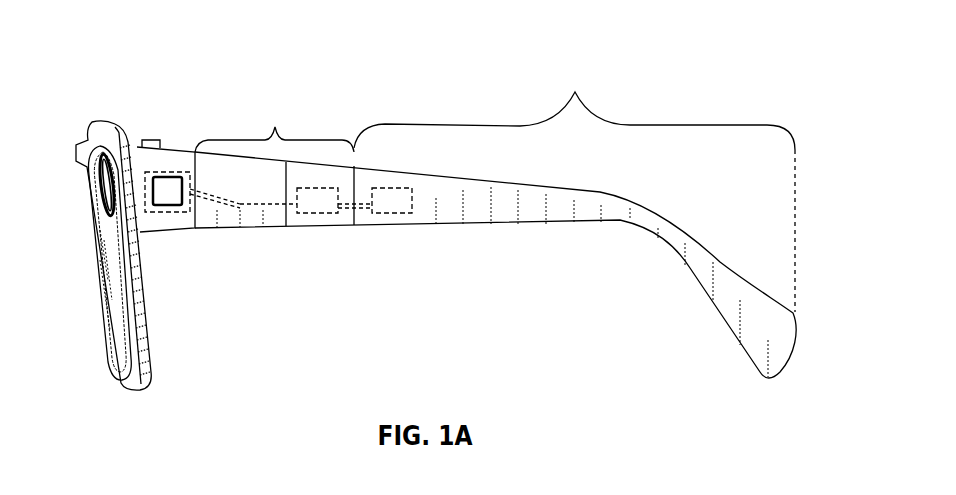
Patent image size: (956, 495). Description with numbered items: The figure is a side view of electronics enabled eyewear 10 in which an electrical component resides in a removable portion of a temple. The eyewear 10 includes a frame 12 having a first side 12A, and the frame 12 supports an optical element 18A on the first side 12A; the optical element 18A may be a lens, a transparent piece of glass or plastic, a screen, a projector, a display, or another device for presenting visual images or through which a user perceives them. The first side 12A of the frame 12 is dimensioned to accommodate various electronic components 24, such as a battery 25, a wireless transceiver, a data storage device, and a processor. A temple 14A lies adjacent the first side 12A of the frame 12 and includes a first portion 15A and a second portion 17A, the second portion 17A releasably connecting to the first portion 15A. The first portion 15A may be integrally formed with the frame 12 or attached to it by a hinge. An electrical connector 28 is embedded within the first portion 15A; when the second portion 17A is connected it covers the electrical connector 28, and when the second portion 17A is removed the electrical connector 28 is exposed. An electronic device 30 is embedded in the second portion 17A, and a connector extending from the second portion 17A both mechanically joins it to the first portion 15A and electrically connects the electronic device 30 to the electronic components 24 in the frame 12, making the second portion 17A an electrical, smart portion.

The eyewear 10 is at (638, 38).
The frame 12 is at (104, 121).
The first side 12A is at (153, 147).
The temple 14A is at (600, 198).
The first portion 15A is at (274, 126).
The second portion 17A is at (574, 187).
The optical element 18A is at (117, 310).
The electronic components 24 is at (170, 210).
The battery 25 is at (172, 196).
The electrical connector 28 is at (327, 215).
The electronic device 30 is at (400, 215).